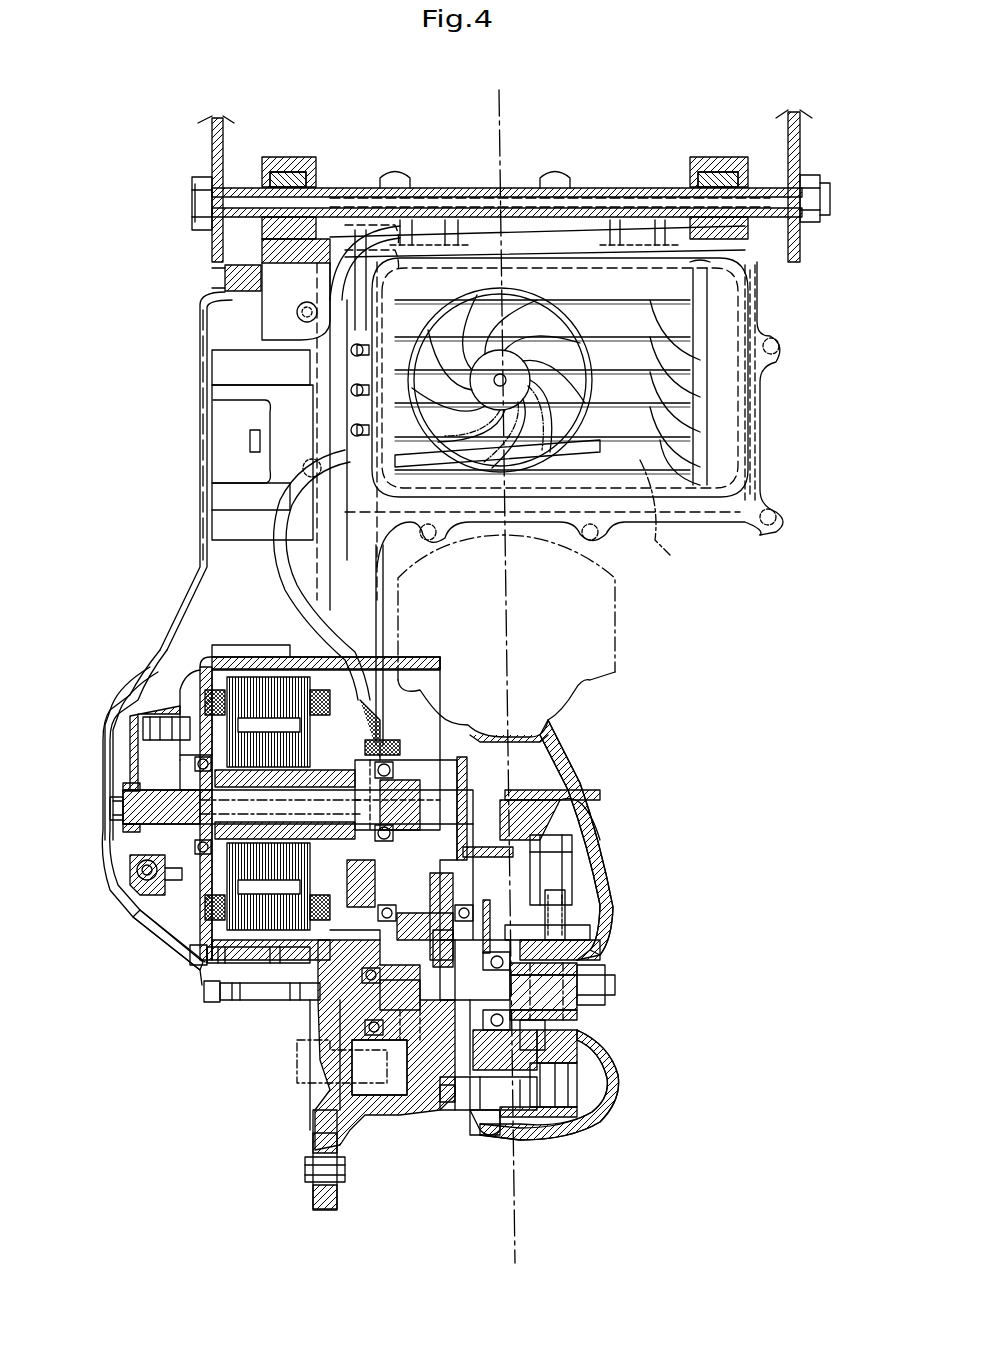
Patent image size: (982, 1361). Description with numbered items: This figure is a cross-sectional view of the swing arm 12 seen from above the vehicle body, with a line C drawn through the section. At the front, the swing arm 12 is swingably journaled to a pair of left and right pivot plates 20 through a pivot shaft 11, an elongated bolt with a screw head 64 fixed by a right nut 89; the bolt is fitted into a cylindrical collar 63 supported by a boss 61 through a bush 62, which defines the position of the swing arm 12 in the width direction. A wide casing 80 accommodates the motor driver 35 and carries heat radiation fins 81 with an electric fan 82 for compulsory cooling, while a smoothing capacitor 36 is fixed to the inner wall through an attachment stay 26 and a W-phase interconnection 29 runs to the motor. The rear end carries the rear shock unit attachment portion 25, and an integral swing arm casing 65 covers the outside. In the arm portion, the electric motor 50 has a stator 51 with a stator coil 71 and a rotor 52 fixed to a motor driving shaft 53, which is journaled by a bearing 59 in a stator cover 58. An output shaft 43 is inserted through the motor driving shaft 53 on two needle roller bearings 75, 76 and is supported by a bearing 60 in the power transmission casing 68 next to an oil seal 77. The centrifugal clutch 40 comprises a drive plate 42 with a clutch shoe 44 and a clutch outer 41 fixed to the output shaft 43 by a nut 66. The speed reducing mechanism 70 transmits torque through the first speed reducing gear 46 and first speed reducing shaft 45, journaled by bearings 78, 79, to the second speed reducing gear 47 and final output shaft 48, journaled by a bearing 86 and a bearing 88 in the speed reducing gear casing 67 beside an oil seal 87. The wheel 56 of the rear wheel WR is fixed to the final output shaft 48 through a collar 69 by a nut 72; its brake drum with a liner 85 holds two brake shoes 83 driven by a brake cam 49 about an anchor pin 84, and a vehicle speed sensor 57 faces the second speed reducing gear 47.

The pivot shaft 11 is at (592, 188).
The swing arm 12 is at (131, 549).
The pivot plates 20 is at (212, 160).
The rear shock unit attachment portion 25 is at (305, 1178).
The attachment stay 26 is at (222, 395).
The W-phase interconnection 29 is at (312, 598).
The motor driver 35 is at (765, 300).
The smoothing capacitor 36 is at (222, 370).
The centrifugal clutch 40 is at (165, 932).
The clutch outer 41 is at (140, 698).
The drive plate 42 is at (150, 760).
The output shaft 43 is at (108, 798).
The clutch shoe 44 is at (158, 915).
The first speed reducing shaft 45 is at (540, 825).
The first speed reducing gear 46 is at (568, 905).
The second speed reducing gear 47 is at (437, 1108).
The final output shaft 48 is at (610, 978).
The brake cam 49 is at (500, 1135).
The electric motor 50 is at (248, 965).
The stator 51 is at (245, 680).
The rotor 52 is at (295, 685).
The motor driving shaft 53 is at (250, 838).
The wheel 56 is at (575, 875).
The vehicle speed sensor 57 is at (295, 1052).
The stator cover 58 is at (221, 645).
The bearing 59 is at (175, 695).
The bearing 60 is at (400, 795).
The boss 61 is at (305, 170).
The bush 62 is at (278, 170).
The cylindrical collar 63 is at (345, 188).
The screw head 64 is at (192, 210).
The swing arm casing 65 is at (200, 482).
The nut 66 is at (128, 785).
The speed reducing gear casing 67 is at (450, 760).
The power transmission casing 68 is at (318, 1110).
The collar 69 is at (580, 928).
The speed reducing mechanism 70 is at (505, 816).
The stator coil 71 is at (215, 740).
The nut 72 is at (615, 965).
The needle roller bearing 75 is at (232, 790).
The needle roller bearing 76 is at (350, 783).
The oil seal 77 is at (350, 698).
The bearing 78 is at (300, 1002).
The bearing 79 is at (555, 840).
The wide casing 80 is at (718, 505).
The heat radiation fins 81 is at (700, 466).
The electric fan 82 is at (673, 518).
The brake shoes 83 is at (610, 1065).
The anchor pin 84 is at (610, 850).
The liner 85 is at (590, 1095).
The bearing 86 is at (380, 1090).
The oil seal 87 is at (462, 1115).
The bearing 88 is at (580, 1050).
The right nut 89 is at (812, 185).
The center line C is at (500, 95).
The rear wheel WR is at (615, 624).